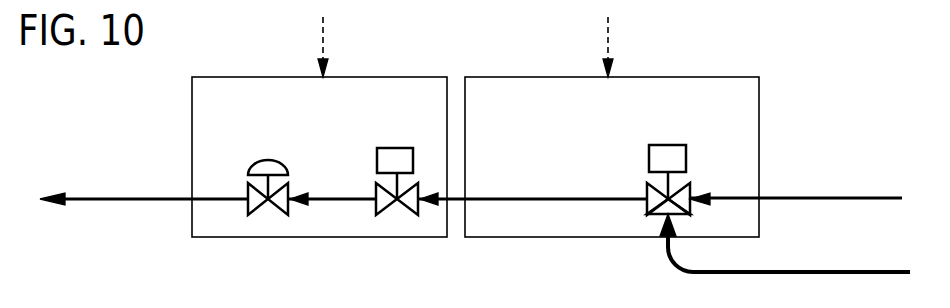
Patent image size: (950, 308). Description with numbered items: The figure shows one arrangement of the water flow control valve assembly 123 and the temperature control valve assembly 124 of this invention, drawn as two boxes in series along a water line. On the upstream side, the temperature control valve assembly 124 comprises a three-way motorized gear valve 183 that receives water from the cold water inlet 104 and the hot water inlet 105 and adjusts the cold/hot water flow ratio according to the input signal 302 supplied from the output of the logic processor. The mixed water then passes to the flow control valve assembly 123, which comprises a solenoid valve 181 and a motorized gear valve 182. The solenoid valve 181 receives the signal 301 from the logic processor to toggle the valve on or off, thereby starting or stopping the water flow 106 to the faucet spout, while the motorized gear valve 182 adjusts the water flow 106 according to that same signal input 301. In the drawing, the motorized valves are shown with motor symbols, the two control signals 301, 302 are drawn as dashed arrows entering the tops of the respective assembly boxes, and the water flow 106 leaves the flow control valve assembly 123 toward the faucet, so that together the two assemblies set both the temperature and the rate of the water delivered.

The cold water inlet 104 is at (795, 263).
The hot water inlet 105 is at (785, 190).
The water flow 106 is at (166, 208).
The water flow control valve assembly 123 is at (184, 102).
The temperature control valve assembly 124 is at (767, 139).
The solenoid valve 181 is at (247, 223).
The motorized gear valve 182 is at (381, 223).
The three-way motorized gear valve 183 is at (648, 224).
The signal 301 is at (334, 36).
The input signal 302 is at (620, 32).